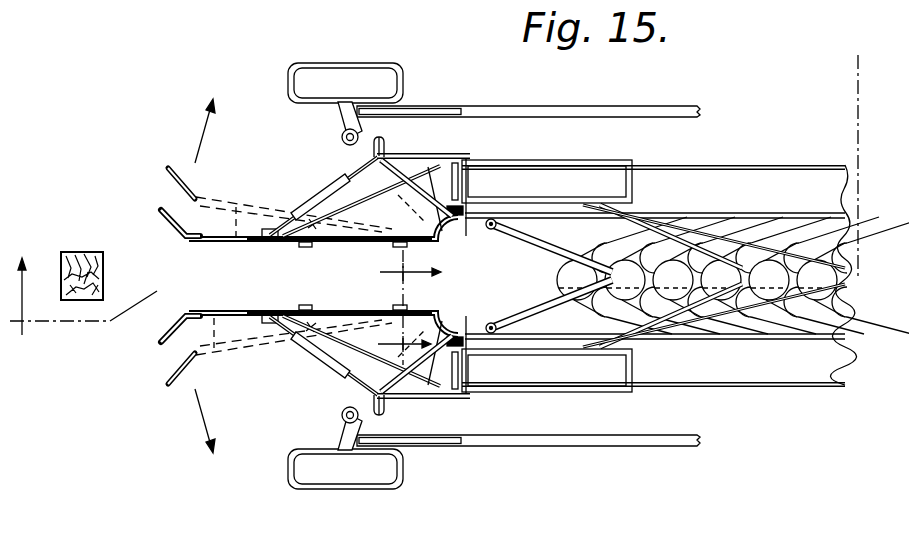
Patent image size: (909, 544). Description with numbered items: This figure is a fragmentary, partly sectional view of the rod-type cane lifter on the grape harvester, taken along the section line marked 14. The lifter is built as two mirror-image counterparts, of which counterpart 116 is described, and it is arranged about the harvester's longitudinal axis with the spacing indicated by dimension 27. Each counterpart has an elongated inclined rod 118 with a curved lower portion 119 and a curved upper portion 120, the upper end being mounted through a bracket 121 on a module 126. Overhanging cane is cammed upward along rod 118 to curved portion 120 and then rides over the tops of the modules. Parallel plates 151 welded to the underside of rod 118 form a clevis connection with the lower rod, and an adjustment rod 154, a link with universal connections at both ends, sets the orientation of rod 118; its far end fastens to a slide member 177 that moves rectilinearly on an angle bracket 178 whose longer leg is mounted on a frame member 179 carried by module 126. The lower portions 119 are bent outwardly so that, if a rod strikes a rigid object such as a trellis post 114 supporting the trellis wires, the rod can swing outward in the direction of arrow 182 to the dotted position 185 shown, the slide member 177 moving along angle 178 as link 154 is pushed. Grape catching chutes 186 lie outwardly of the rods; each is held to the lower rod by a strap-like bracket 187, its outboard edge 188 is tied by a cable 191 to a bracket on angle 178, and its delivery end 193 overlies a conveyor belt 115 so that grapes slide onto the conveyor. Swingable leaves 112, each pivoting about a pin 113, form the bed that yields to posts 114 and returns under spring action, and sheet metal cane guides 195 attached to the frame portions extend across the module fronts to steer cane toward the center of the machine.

The section line 14- 14 is at (437, 194).
The dimension/offset 27 is at (373, 292).
The plates or leaves 112 is at (723, 243).
The pin 113 is at (497, 217).
The post 114 is at (103, 268).
The conveyor belt 115 is at (760, 155).
The rod-type cane lifter counterpart 116 is at (168, 232).
The elongated inclined rod 118 is at (240, 250).
The curved lower portion 119 is at (170, 207).
The curved upper portion 120 is at (462, 228).
The bracket 121 is at (477, 167).
The module 126 is at (608, 160).
The parallel plates 151 is at (264, 247).
The adjustment rod 154 is at (297, 207).
The slide member 177 is at (413, 140).
The angle bracket 178 is at (388, 150).
The frame member 179 is at (427, 163).
The arrow 182 is at (200, 130).
The hidden link position 185 is at (244, 232).
The grape catching chute 186 is at (250, 230).
The bracket 187 is at (398, 248).
The outboard edge 188 is at (293, 210).
The cable 191 is at (368, 110).
The delivery end 193 is at (450, 215).
The sheet metal cane guide 195 is at (412, 200).